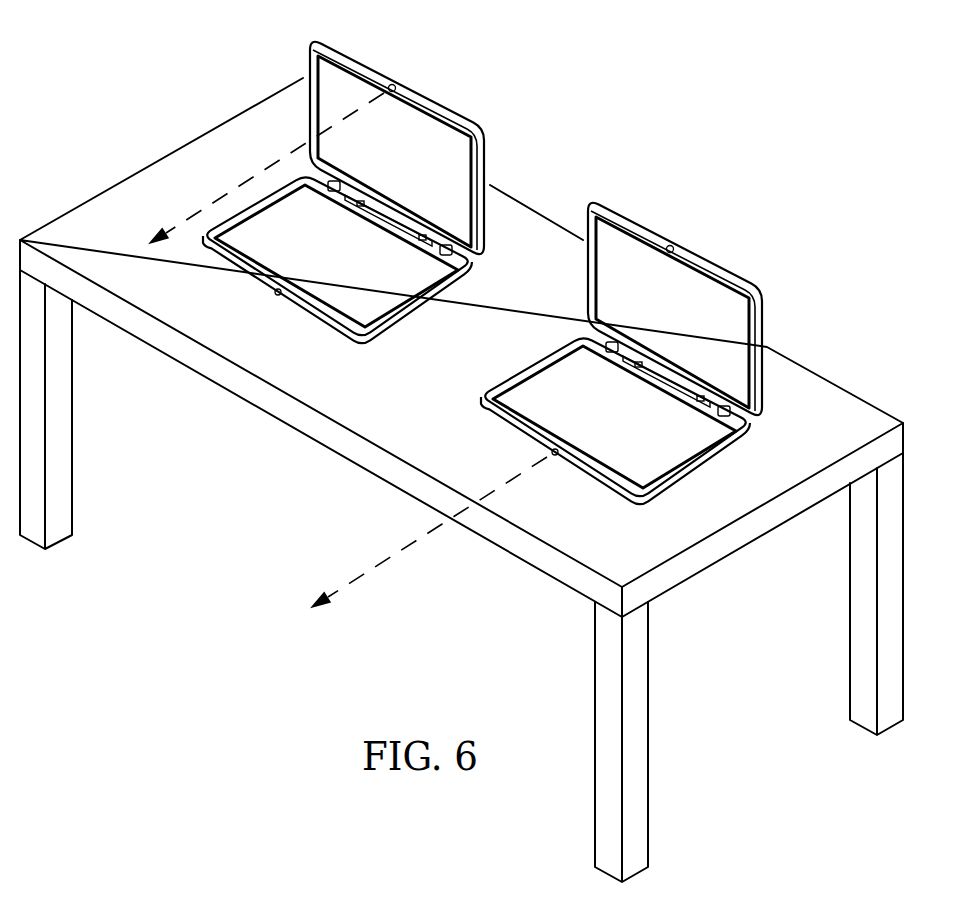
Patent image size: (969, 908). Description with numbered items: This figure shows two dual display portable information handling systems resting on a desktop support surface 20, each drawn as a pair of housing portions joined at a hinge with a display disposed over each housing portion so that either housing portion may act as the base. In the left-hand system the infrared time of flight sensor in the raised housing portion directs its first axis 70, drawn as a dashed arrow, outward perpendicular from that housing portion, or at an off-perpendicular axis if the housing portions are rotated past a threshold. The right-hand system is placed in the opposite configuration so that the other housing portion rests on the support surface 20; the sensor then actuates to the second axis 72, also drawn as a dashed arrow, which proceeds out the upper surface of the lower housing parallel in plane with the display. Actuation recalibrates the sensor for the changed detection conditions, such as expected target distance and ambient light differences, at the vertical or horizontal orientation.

The support surface 20 is at (535, 212).
The first axis 70 is at (260, 173).
The second axis 72 is at (398, 550).